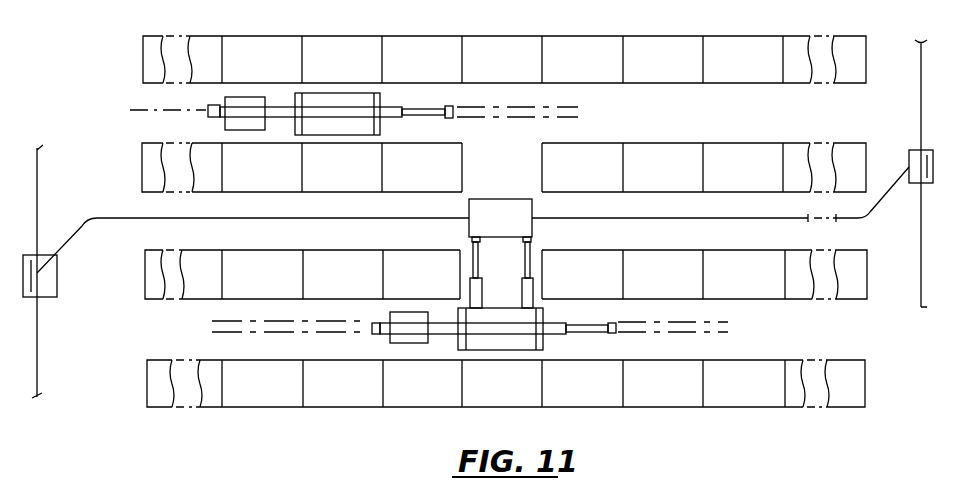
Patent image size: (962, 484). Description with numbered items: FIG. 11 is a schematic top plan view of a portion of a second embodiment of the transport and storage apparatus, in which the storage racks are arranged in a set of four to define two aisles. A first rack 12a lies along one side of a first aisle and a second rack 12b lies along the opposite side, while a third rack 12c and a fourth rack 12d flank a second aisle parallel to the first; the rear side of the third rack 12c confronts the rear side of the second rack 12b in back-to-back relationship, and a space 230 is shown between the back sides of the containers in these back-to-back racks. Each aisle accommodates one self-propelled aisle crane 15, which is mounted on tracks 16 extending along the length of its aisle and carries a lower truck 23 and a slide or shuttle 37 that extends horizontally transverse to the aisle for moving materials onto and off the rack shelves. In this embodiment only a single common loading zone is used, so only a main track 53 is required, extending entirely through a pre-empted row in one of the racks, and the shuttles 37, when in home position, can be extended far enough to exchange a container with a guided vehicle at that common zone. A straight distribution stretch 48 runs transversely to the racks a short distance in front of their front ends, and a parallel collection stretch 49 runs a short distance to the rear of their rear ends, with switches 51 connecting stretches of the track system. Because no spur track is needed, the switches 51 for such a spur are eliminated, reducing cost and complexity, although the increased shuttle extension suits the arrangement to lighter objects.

The first rack 12a is at (864, 407).
The second rack 12b is at (867, 299).
The third rack 12c is at (866, 146).
The fourth rack 12d is at (866, 52).
The aisle crane 15 is at (392, 98).
The track 16 is at (560, 126).
The lower truck 23 is at (533, 206).
The slide or shuttle 37 is at (532, 246).
The distribution stretch 48 is at (38, 348).
The collection stretch 49 is at (921, 101).
The switch 51 is at (57, 278).
The main track 53 is at (756, 226).
The space 230 is at (178, 229).